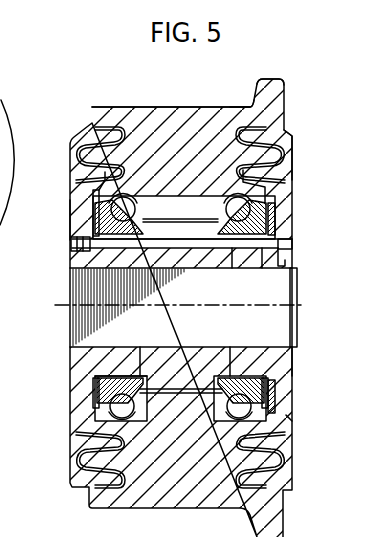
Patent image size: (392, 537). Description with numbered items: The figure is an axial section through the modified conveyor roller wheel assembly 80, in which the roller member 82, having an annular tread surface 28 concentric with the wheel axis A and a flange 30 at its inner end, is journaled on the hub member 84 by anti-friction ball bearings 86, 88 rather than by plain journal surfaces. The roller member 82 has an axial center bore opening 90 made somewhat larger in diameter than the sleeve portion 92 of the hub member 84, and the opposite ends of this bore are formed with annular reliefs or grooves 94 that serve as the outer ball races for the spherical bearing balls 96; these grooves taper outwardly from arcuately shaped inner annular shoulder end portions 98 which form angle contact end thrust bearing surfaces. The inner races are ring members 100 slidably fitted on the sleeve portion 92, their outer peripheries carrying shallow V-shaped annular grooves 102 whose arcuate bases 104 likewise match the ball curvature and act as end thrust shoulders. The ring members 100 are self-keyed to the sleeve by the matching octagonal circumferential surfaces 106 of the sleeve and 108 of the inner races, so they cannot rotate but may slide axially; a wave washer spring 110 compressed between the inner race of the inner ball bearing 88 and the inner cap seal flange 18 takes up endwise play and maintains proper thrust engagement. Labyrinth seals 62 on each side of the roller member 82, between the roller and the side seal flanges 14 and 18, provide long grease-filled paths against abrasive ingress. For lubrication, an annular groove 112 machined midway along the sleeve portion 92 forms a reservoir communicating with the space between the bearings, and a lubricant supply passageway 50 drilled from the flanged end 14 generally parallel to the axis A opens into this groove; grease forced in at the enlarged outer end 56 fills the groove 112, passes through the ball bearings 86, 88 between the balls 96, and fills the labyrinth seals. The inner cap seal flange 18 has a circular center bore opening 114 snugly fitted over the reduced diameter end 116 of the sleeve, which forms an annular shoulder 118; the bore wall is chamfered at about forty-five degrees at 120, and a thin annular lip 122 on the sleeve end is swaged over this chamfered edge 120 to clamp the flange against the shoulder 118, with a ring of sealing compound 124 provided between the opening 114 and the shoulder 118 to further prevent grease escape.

The modified conveyor roller wheel assembly 80 is at (114, 71).
The roller member 82 is at (165, 107).
The annular tread surface 28 is at (202, 107).
The flange 30 is at (273, 79).
The labyrinth seals 62 is at (88, 148).
The ball bearing 86 is at (96, 197).
The side seal flange 14 is at (78, 219).
The enlarged outer end 56 is at (71, 246).
The lubricant supply passageway 50 is at (119, 248).
The annular groove 112 is at (138, 205).
The outer peripheral surface of sleeve portion 106 is at (206, 204).
The ball bearing 88 is at (257, 203).
The inner cap seal flange 18 is at (282, 214).
The wave washer spring 110 is at (274, 222).
The chamfered edge 120 is at (292, 246).
The annular lip or ring portion 122 is at (290, 252).
The axial center bore opening 90 is at (204, 236).
The circumferential surface of inner ball race 108 is at (240, 268).
The ring of sealing compound 124 is at (259, 268).
The circular center bore opening 114 is at (293, 274).
The wheel axis A is at (62, 305).
The sleeve portion 92 is at (209, 347).
The inner annular shoulder end portions 98 is at (140, 347).
The arcuate base of V groove 104 is at (110, 349).
The annular shoulder 118 is at (296, 353).
The hub member 84 is at (82, 363).
The reduced diameter annular groove or end 116 is at (291, 380).
The ring members 100 is at (100, 391).
The annular reliefs or grooves 94 is at (110, 424).
The annular grooves 102 is at (140, 397).
The bearing balls 96 is at (130, 418).